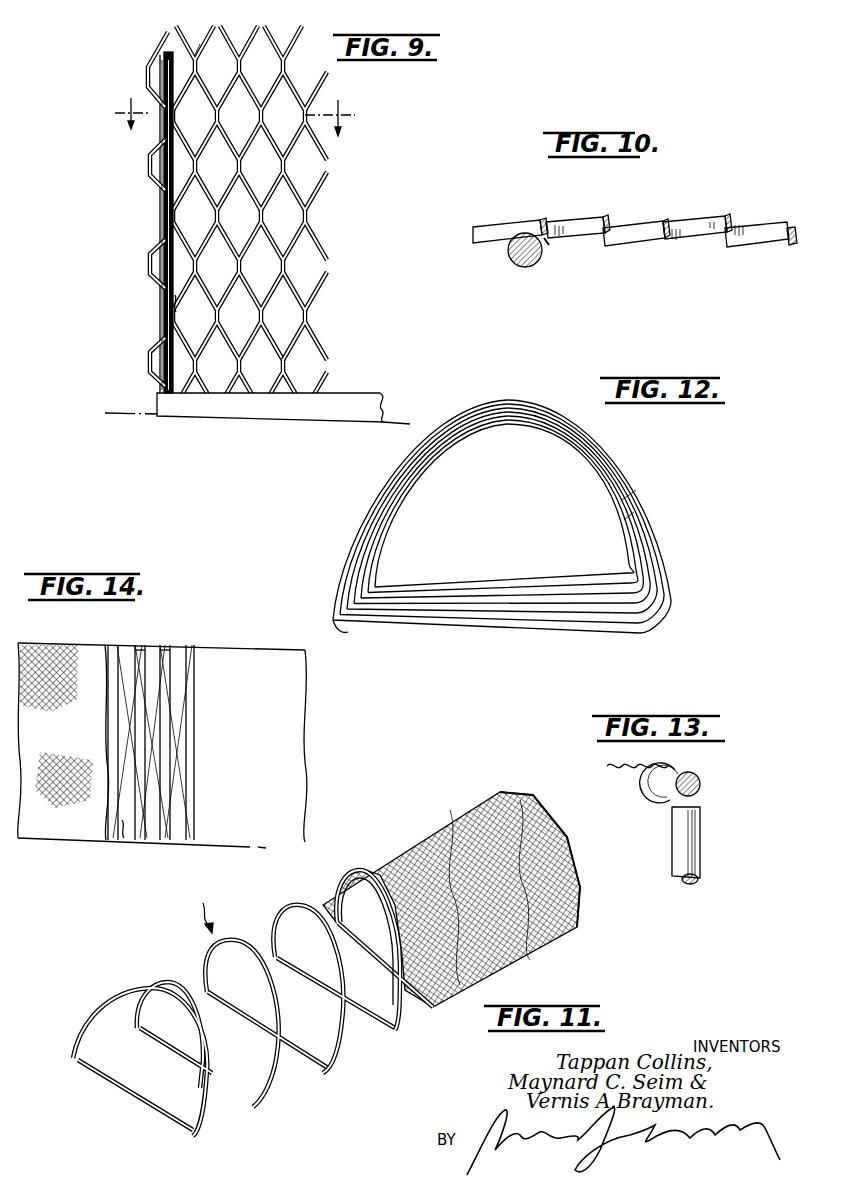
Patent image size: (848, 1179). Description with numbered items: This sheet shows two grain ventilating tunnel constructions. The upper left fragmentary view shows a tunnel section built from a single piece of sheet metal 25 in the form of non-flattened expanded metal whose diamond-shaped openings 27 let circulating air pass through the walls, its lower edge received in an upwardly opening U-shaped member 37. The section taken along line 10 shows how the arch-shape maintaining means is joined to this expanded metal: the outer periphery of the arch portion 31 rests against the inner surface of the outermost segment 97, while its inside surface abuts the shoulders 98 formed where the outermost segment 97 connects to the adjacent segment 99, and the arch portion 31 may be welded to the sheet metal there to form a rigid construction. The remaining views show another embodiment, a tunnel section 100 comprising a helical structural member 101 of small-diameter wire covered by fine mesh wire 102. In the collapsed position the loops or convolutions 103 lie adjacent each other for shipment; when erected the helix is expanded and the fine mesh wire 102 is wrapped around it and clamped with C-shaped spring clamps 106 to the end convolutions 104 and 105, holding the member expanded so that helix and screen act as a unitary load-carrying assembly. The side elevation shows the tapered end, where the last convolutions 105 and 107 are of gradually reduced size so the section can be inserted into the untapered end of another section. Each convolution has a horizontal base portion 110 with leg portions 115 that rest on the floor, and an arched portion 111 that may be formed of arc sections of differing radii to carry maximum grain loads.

In FIG. 9, the section line 10— 10 is at (241, 117).
In FIG. 9, the sheet metal 25 is at (320, 232).
In FIG. 10, the sheet metal 25 is at (640, 226).
In FIG. 9, the openings 27 is at (300, 320).
In FIG. 10, the openings 27 is at (575, 222).
In FIG. 9, the arch portion 31 is at (160, 205).
In FIG. 10, the arch portion 31 is at (522, 268).
In FIG. 9, the U-shaped member 37 is at (362, 404).
In FIG. 9, the outermost segment 97 is at (150, 60).
In FIG. 10, the outermost segment 97 is at (493, 227).
In FIG. 9, the shoulders 98 is at (163, 311).
In FIG. 10, the shoulders 98 is at (549, 246).
In FIG. 9, the adjacent segment 99 is at (200, 44).
In FIG. 12, the tunnel section 100 is at (532, 535).
In FIG. 14, the tunnel section 100 is at (162, 753).
In FIG. 11, the tunnel section 100 is at (320, 972).
In FIG. 14, the helical structural member 101 is at (128, 820).
In FIG. 14, the fine mesh wire 102 is at (63, 823).
In FIG. 13, the fine mesh wire 102 is at (640, 770).
In FIG. 11, the fine mesh wire 102 is at (362, 858).
In FIG. 12, the loops or convolutions 103 is at (626, 500).
In FIG. 12, the end convolution 104 is at (387, 486).
In FIG. 11, the end convolution 104 is at (102, 1001).
In FIG. 12, the end convolution 105 is at (631, 470).
In FIG. 14, the end convolution 105 is at (195, 710).
In FIG. 13, the end convolution 105 is at (705, 835).
In FIG. 11, the end convolution 105 is at (572, 840).
In FIG. 14, the C-shaped spring clamp 106 is at (165, 672).
In FIG. 13, the C-shaped spring clamp 106 is at (712, 770).
In FIG. 14, the convolution 107 is at (140, 660).
In FIG. 11, the horizontal base portion 110 is at (92, 1069).
In FIG. 11, the arched portion 111 is at (337, 998).
In FIG. 12, the leg portions 115 is at (340, 626).
In FIG. 11, the leg portions 115 is at (323, 1072).